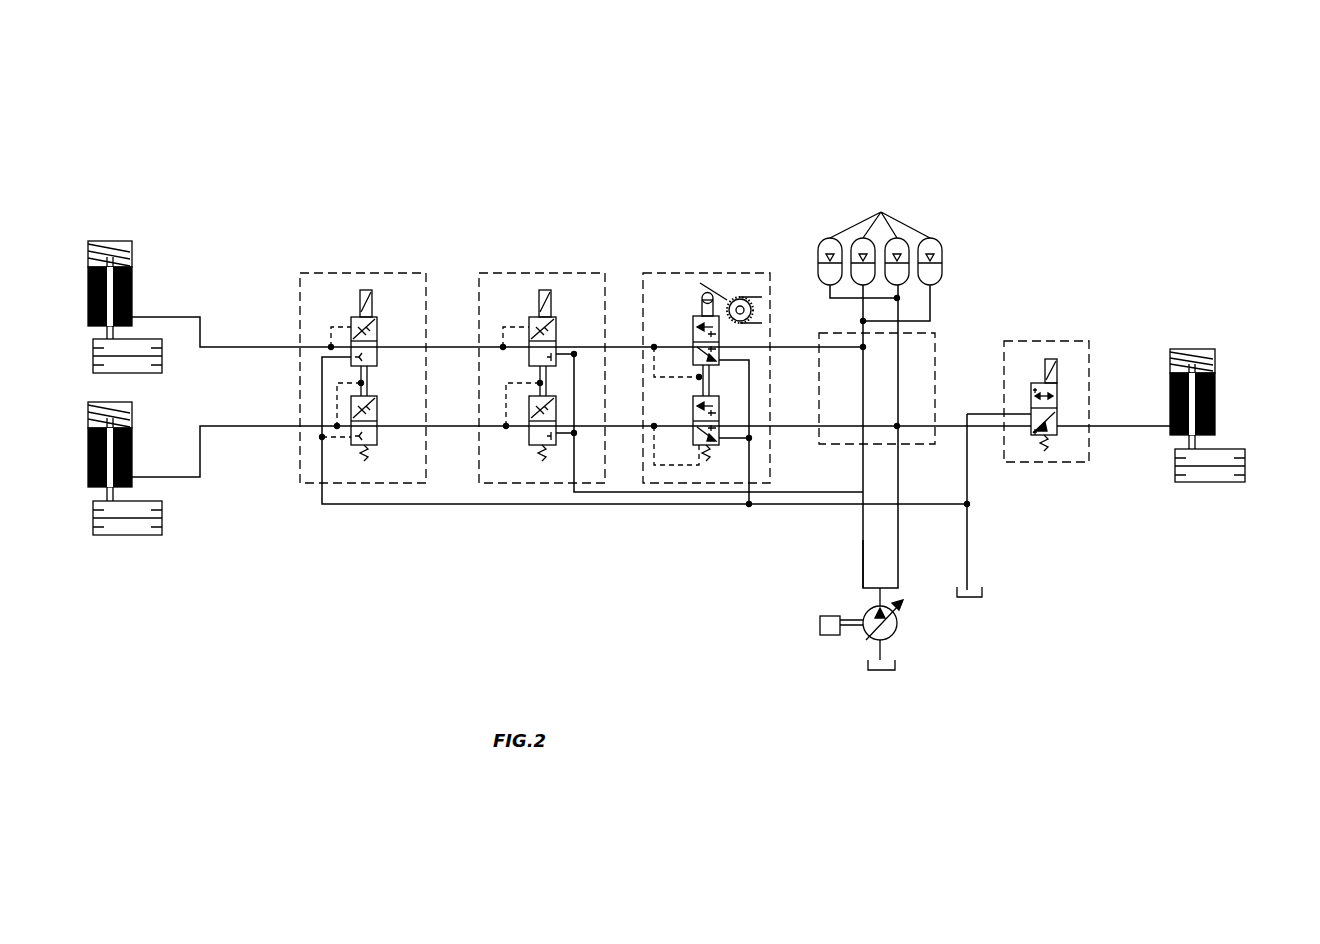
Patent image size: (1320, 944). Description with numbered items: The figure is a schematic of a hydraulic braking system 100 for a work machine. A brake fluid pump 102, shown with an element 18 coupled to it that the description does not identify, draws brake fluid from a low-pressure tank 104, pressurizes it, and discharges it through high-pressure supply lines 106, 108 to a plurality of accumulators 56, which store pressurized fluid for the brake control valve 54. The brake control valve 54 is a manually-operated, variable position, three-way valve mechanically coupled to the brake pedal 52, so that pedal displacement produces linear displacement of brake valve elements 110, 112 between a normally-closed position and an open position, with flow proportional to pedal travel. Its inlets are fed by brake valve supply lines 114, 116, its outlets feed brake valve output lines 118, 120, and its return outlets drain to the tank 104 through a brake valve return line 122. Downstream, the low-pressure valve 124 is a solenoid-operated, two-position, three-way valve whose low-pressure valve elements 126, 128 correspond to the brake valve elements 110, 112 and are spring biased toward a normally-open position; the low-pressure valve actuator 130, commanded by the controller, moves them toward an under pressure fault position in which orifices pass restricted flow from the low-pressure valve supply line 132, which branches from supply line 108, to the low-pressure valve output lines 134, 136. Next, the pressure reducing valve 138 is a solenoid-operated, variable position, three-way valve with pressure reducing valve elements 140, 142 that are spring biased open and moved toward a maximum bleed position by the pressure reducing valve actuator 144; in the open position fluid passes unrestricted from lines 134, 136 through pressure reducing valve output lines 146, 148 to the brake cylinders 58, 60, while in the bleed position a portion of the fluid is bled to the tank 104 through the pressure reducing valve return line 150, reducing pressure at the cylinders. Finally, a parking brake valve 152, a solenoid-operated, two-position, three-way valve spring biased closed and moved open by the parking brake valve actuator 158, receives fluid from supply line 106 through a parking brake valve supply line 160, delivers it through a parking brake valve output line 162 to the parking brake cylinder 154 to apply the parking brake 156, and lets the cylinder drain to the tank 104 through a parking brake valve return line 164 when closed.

The hydraulic braking system 100 is at (277, 97).
The brake cylinder 60 is at (88, 283).
The brake cylinder 58 is at (88, 445).
The pressure reducing valve output line 148 is at (285, 345).
The pressure reducing valve output line 146 is at (276, 430).
The pressure reducing valve 138 is at (313, 487).
The pressure reducing valve element 142 is at (352, 330).
The pressure reducing valve actuator 144 is at (376, 313).
The pressure reducing valve element 140 is at (375, 447).
The low-pressure valve output line 136 is at (438, 325).
The low-pressure valve output line 134 is at (438, 403).
The pressure reducing valve return line 150 is at (410, 507).
The low-pressure valve 124 is at (540, 484).
The low-pressure valve element 128 is at (532, 333).
The low-pressure valve actuator 130 is at (553, 310).
The low-pressure valve element 126 is at (535, 445).
The low-pressure valve supply line 132 is at (768, 493).
The brake control valve 54 is at (668, 486).
The brake valve element 112 is at (690, 333).
The brake pedal 52 is at (716, 300).
The brake valve output line 120 is at (693, 343).
The brake valve output line 118 is at (693, 420).
The brake valve element 110 is at (718, 447).
The brake valve return line 122 is at (748, 400).
The brake valve supply line 116 is at (772, 347).
The brake valve supply line 114 is at (777, 427).
The accumulators 56 is at (940, 238).
The high-pressure supply line 106 is at (898, 548).
The high-pressure supply line 108 is at (863, 560).
The parking brake valve supply line 160 is at (937, 422).
The parking brake valve return line 164 is at (967, 500).
The brake fluid pump 102 is at (898, 626).
The controller 18 is at (820, 625).
The tank 104 is at (895, 663).
The parking brake valve 152 is at (1047, 463).
The parking brake valve actuator 158 is at (1057, 372).
The parking brake valve output line 162 is at (1108, 426).
The parking brake cylinder 154 is at (1215, 393).
The parking brake 156 is at (1245, 467).